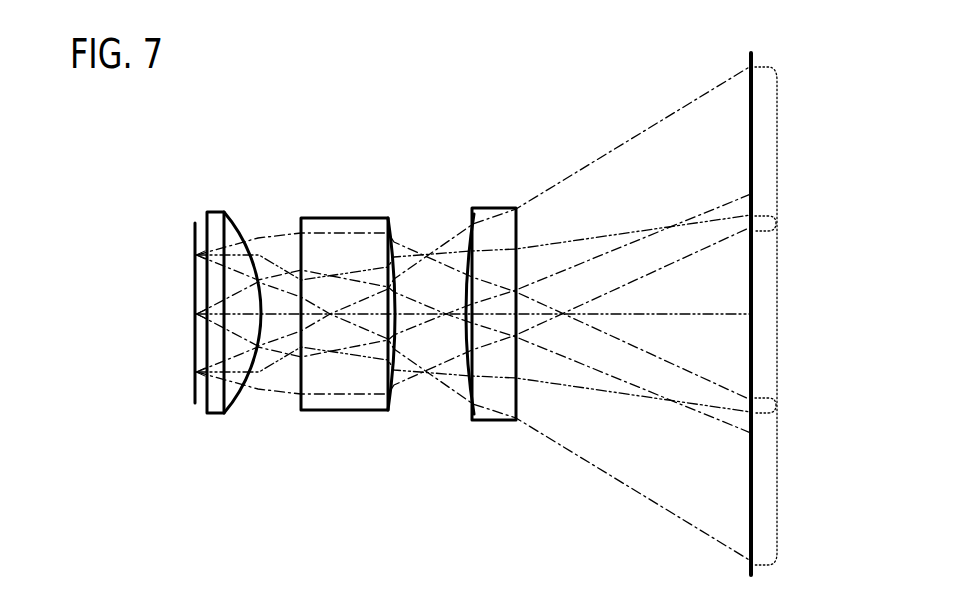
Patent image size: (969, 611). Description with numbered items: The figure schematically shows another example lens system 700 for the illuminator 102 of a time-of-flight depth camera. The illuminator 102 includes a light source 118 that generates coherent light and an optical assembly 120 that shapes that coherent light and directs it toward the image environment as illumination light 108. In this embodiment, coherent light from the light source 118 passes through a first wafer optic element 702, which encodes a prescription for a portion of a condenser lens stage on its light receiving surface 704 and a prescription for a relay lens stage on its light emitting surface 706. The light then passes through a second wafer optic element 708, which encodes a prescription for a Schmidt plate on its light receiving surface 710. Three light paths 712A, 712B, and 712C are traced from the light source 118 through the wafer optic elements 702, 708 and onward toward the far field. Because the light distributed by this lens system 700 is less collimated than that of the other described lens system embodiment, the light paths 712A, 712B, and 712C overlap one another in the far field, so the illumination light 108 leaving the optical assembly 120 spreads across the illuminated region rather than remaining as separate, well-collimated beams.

The illuminator 102 is at (570, 53).
The illumination light 108 is at (631, 520).
The light source 118 is at (195, 403).
The optical assembly 120 is at (287, 122).
The lens system 700 is at (386, 490).
The wafer optic element 702 is at (342, 216).
The light receiving surface 704 is at (298, 222).
The light emitting surface 706 is at (396, 232).
The wafer optic element 708 is at (492, 421).
The light receiving surface 710 is at (470, 207).
The light path 712A is at (33, 255).
The light path 712B is at (33, 314).
The light path 712C is at (33, 372).